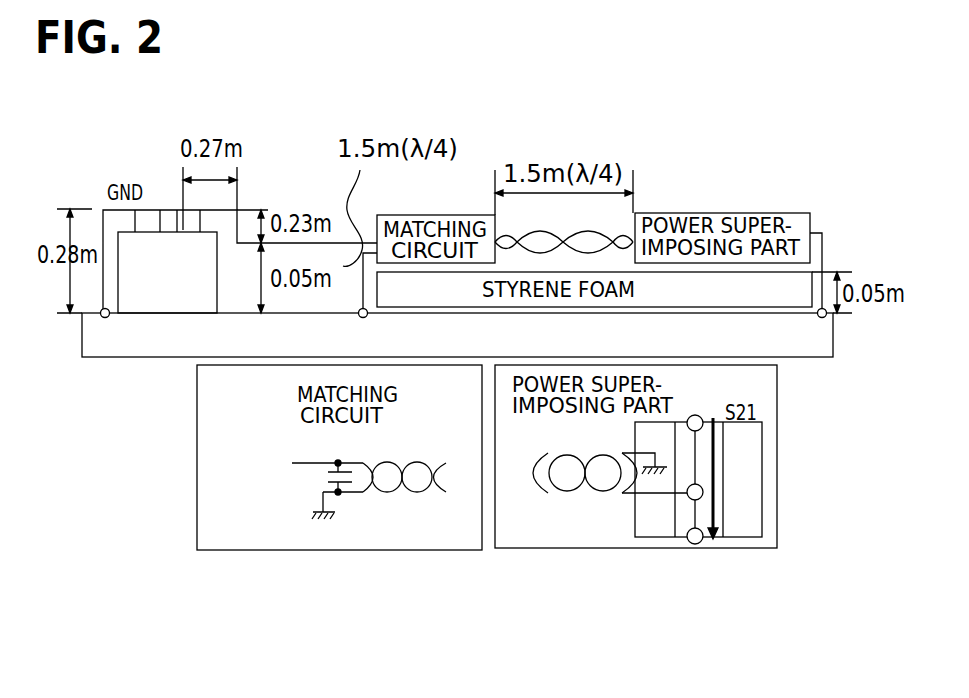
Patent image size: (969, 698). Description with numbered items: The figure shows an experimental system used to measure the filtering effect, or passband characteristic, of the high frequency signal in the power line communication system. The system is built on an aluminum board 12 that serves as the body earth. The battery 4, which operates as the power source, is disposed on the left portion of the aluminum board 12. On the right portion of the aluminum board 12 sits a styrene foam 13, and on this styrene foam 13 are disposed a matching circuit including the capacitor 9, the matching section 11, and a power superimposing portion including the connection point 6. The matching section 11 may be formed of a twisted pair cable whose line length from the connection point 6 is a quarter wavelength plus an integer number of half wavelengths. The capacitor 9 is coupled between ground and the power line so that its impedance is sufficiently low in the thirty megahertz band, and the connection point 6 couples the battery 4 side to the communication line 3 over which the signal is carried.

The matching section 11 is at (523, 142).
The battery 4 is at (217, 290).
The aluminum board 12 is at (120, 358).
The styrene foam 13 is at (812, 288).
The capacitor 9 is at (345, 502).
The connection point 6 is at (703, 490).
The communication line 3 is at (693, 518).